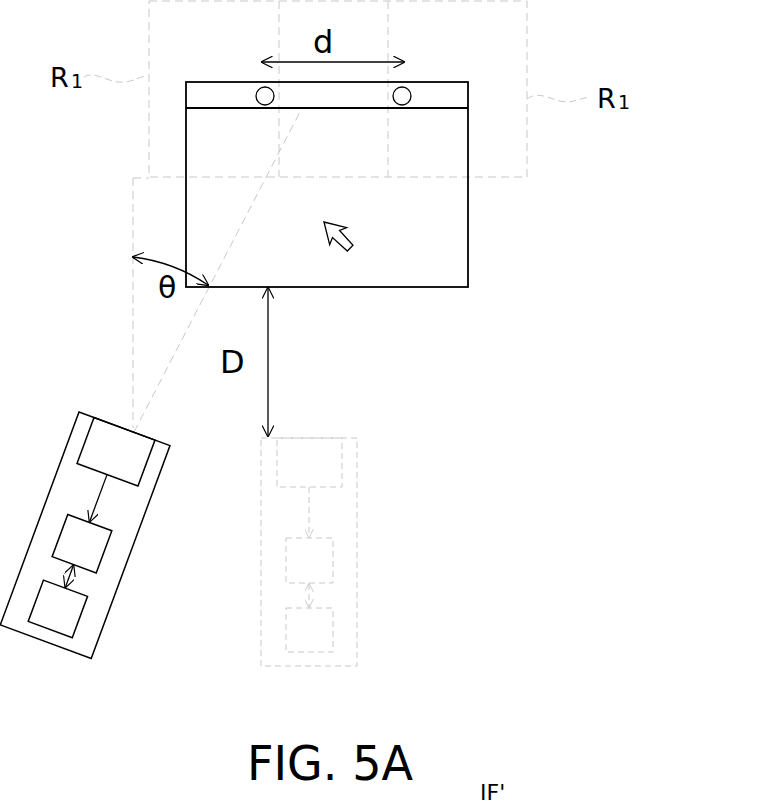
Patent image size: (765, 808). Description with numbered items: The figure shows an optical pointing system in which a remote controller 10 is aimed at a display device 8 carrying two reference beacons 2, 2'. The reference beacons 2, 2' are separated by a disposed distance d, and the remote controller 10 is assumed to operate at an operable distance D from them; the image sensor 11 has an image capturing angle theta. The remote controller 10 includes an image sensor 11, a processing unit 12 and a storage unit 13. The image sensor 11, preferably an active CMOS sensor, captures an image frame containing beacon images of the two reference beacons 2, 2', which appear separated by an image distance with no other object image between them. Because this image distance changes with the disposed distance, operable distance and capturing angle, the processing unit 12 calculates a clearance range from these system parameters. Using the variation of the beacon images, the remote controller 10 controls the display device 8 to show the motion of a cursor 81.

The reference beacon 2 is at (224, 53).
The reference beacon 2' is at (444, 61).
The display device 8 is at (468, 237).
The cursor 81 is at (352, 248).
The remote controller 10 is at (125, 575).
The image sensor 11 is at (209, 452).
The processing unit 12 is at (192, 548).
The storage unit 13 is at (180, 616).